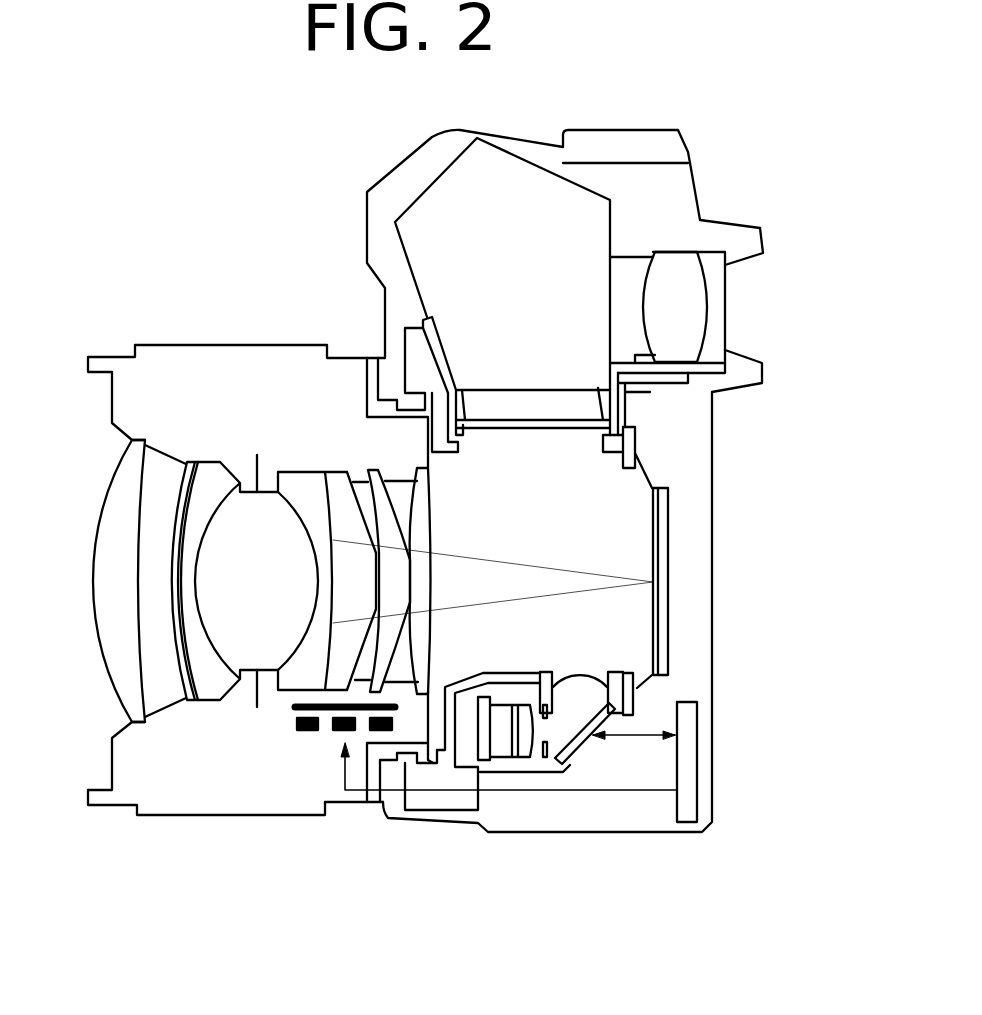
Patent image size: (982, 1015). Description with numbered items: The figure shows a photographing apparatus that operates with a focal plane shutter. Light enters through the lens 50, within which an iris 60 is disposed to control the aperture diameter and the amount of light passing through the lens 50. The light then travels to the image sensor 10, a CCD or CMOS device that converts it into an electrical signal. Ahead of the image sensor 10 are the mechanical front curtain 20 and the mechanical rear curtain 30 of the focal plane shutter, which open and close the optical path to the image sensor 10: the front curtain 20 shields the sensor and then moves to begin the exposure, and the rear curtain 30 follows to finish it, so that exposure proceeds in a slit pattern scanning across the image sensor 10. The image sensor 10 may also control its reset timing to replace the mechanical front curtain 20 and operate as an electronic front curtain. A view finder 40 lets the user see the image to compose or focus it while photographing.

The image sensor 10 is at (658, 582).
The mechanical front curtain 20 is at (643, 694).
The mechanical rear curtain 30 is at (643, 440).
The view finder 40 is at (732, 300).
The lens 50 is at (259, 543).
The iris 60 is at (243, 462).